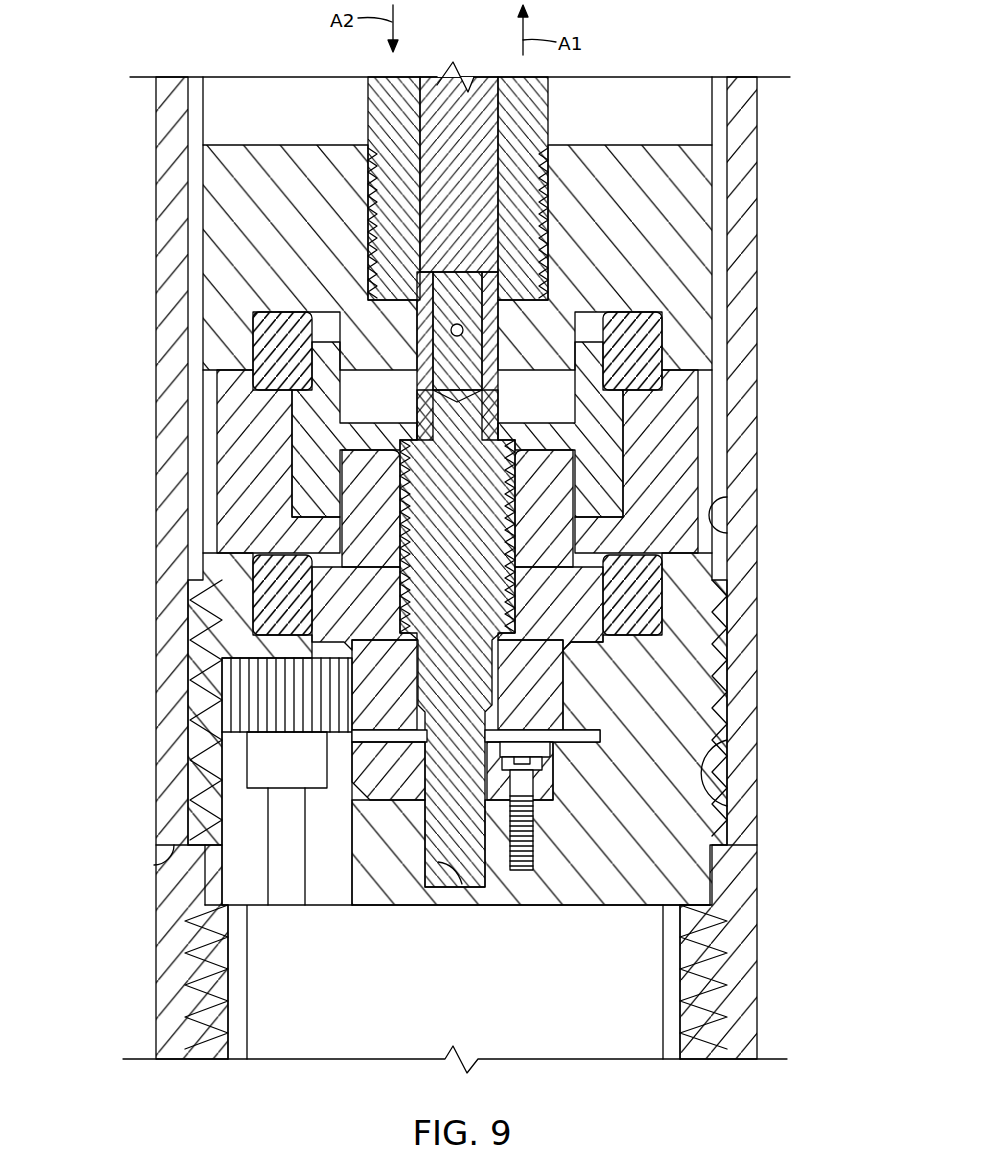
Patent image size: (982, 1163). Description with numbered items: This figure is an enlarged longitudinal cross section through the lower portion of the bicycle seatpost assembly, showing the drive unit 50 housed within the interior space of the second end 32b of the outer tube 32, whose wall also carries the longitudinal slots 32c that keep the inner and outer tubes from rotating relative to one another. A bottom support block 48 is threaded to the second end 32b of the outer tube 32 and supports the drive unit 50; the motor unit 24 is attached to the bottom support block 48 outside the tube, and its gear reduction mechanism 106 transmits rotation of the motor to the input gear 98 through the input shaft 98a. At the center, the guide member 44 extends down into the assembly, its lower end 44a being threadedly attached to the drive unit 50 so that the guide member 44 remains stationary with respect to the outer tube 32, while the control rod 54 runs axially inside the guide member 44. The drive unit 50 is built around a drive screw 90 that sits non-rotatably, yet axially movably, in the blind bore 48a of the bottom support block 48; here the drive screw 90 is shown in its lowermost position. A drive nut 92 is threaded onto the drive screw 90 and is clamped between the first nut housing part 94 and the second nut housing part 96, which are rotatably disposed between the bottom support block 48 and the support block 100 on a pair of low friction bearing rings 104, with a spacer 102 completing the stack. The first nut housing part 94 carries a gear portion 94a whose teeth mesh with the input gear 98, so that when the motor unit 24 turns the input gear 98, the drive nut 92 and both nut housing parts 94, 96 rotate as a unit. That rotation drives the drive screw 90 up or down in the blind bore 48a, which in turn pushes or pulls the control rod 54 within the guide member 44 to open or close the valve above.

The motor unit 24 is at (248, 993).
The outer tube 32 is at (758, 123).
The second end of the outer tube 32b is at (160, 862).
The longitudinal slots 32c is at (730, 508).
The guide member 44 is at (548, 107).
The lower end of the guide member 44a is at (522, 218).
The bottom support block 48 is at (685, 683).
The blind bore 48a is at (462, 887).
The drive unit 50 is at (203, 448).
The control rod 54 is at (432, 117).
The drive screw 90 is at (420, 598).
The drive nut 92 is at (556, 506).
The first nut housing part 94 is at (582, 624).
The gear portion 94a is at (536, 702).
The second nut housing part 96 is at (607, 433).
The input gear 98 is at (258, 696).
The input shaft 98a is at (283, 882).
The support block 100 is at (668, 265).
The spacer 102 is at (208, 497).
The low friction bearing rings 104 is at (268, 338).
The gear reduction mechanism 106 is at (663, 1015).